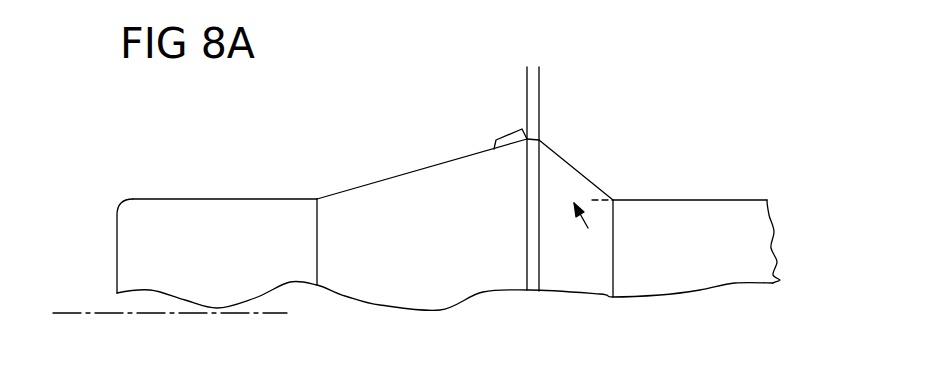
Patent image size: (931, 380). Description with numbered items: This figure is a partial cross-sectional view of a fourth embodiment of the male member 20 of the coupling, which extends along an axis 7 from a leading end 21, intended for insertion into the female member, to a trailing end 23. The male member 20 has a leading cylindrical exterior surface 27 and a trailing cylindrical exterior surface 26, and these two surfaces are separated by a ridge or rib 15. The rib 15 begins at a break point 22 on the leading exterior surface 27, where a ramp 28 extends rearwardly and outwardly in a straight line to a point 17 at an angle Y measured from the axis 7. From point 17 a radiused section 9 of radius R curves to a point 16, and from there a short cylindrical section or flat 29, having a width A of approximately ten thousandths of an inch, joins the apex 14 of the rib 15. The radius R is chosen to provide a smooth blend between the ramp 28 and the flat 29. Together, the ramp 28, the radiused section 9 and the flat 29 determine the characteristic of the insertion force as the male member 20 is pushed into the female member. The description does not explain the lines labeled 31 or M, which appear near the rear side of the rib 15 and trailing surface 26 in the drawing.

The axis 7 is at (140, 313).
The radiused section 9 is at (511, 130).
The apex 14 is at (542, 138).
The rib 15 is at (373, 75).
The point 16 is at (517, 130).
The point 17 is at (494, 148).
The male member 20 is at (685, 128).
The leading end 21 is at (117, 216).
The break point 22 is at (317, 199).
The trailing end 23 is at (778, 254).
The trailing cylindrical exterior surface 26 is at (707, 200).
The leading cylindrical exterior surface 27 is at (198, 199).
The ramp 28 is at (445, 161).
The flat 29 is at (531, 283).
The flank face 31 is at (570, 160).
The width of the flat A is at (487, 73).
The direction arrow M is at (583, 175).
The radius R is at (503, 148).
The angle Y is at (381, 178).